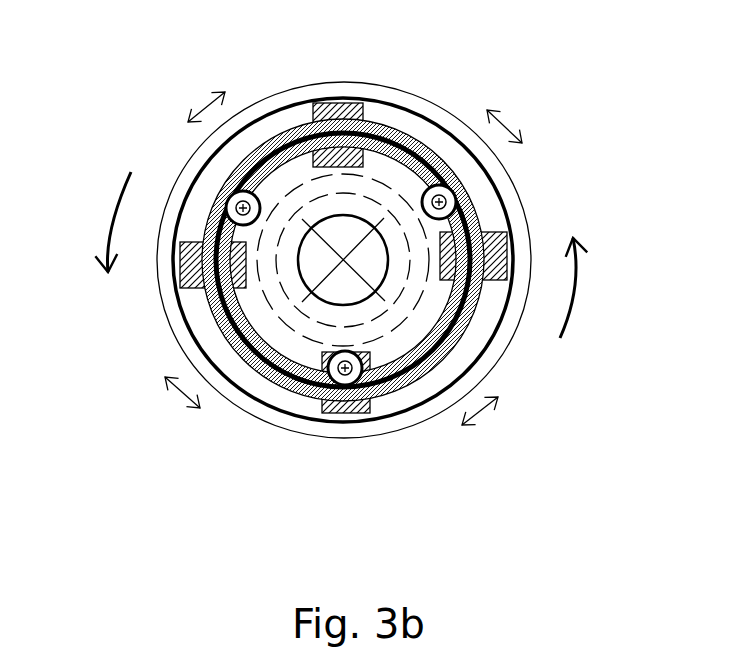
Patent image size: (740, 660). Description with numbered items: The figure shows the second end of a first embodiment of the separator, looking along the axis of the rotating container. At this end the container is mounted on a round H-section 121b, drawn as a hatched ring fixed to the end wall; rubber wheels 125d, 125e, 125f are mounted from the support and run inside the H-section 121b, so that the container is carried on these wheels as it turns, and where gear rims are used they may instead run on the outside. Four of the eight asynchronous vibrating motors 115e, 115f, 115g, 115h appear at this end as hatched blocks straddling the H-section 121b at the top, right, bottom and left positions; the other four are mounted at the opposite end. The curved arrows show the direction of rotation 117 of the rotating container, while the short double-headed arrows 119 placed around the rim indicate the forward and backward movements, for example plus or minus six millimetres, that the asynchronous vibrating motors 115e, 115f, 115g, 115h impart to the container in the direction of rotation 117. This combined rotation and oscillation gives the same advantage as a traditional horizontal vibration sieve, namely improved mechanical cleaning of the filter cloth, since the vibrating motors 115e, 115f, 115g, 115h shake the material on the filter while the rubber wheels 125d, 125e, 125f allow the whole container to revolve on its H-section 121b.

The asynchronous vibrating motor 115e is at (342, 108).
The asynchronous vibrating motor 115f is at (503, 247).
The asynchronous vibrating motor 115g is at (346, 412).
The asynchronous vibrating motor 115h is at (183, 282).
The round H-section 121b is at (470, 213).
The rubber wheel 125d is at (435, 153).
The rubber wheel 125e is at (324, 383).
The rubber wheel 125f is at (232, 197).
The direction of rotation 117 is at (105, 213).
The arrow indicating forward and backward movement 119 is at (197, 102).